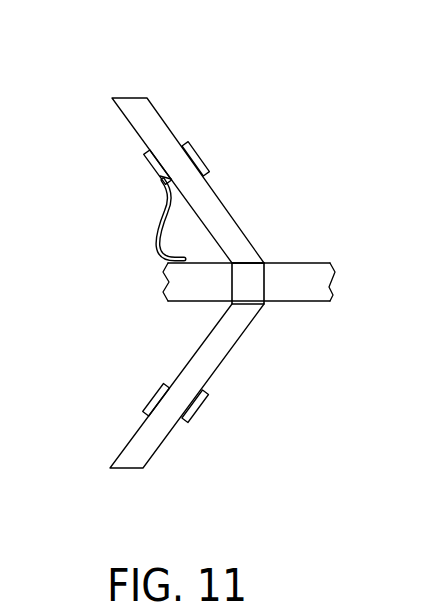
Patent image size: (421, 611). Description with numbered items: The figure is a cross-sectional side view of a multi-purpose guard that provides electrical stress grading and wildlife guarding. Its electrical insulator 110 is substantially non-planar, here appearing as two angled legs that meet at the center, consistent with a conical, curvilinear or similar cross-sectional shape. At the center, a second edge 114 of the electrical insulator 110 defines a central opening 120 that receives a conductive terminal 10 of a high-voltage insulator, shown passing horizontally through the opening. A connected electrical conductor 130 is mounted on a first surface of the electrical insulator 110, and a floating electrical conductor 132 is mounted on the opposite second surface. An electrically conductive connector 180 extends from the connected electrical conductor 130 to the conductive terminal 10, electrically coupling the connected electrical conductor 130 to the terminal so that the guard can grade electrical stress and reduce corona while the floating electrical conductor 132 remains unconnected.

The conductive terminal 10 is at (313, 263).
The electrical insulator 110 is at (149, 100).
The second edge 114 is at (250, 263).
The central opening 120 is at (254, 288).
The connected electrical conductor 130 is at (148, 165).
The floating electrical conductor 132 is at (203, 160).
The electrically conductive connector 180 is at (156, 232).